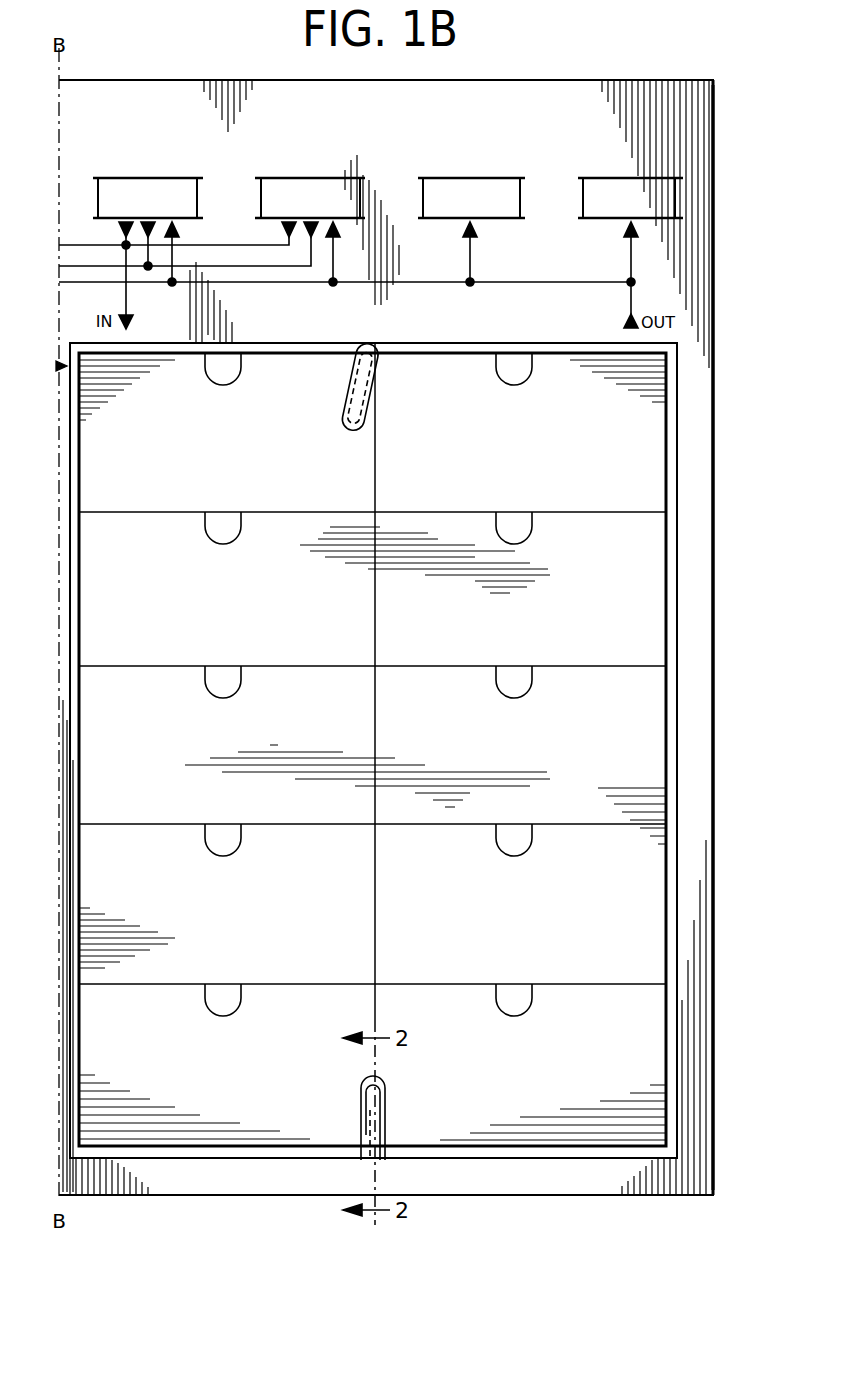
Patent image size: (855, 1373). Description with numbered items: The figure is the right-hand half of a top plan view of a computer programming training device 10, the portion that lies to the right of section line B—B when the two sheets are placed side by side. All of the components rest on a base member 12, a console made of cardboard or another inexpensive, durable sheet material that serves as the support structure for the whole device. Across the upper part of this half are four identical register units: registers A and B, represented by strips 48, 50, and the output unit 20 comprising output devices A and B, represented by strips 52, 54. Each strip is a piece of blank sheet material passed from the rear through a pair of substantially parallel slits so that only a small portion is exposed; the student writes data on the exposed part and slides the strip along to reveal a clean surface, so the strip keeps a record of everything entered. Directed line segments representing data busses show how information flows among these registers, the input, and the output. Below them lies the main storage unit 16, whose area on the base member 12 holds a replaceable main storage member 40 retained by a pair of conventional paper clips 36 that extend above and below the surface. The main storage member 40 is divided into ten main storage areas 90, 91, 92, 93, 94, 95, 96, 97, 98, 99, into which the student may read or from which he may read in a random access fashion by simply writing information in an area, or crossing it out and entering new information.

The computer programming training device 10 is at (724, 403).
The base member 12 is at (698, 190).
The main storage unit 16 is at (373, 770).
The output unit 20 is at (510, 200).
The paper clip 36 is at (346, 424).
The replaceable main storage member 40 is at (650, 568).
The strip 48 is at (133, 213).
The strip 50 is at (285, 213).
The strip 52 is at (450, 213).
The strip 54 is at (612, 213).
The main storage area 90 is at (223, 369).
The main storage area 91 is at (223, 528).
The main storage area 92 is at (223, 682).
The main storage area 93 is at (223, 840).
The main storage area 94 is at (223, 1000).
The main storage area 95 is at (514, 369).
The main storage area 96 is at (514, 528).
The main storage area 97 is at (514, 682).
The main storage area 98 is at (514, 840).
The main storage area 99 is at (514, 1000).